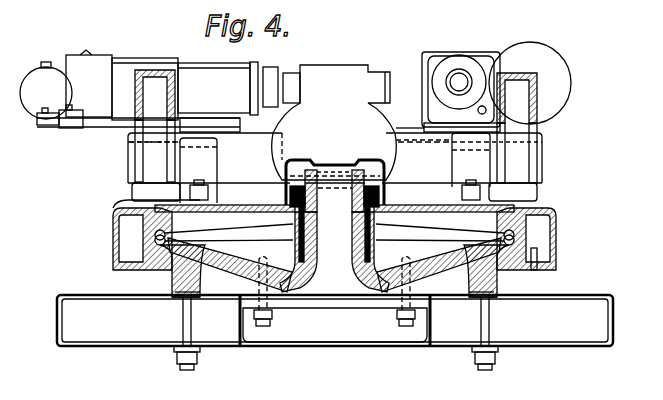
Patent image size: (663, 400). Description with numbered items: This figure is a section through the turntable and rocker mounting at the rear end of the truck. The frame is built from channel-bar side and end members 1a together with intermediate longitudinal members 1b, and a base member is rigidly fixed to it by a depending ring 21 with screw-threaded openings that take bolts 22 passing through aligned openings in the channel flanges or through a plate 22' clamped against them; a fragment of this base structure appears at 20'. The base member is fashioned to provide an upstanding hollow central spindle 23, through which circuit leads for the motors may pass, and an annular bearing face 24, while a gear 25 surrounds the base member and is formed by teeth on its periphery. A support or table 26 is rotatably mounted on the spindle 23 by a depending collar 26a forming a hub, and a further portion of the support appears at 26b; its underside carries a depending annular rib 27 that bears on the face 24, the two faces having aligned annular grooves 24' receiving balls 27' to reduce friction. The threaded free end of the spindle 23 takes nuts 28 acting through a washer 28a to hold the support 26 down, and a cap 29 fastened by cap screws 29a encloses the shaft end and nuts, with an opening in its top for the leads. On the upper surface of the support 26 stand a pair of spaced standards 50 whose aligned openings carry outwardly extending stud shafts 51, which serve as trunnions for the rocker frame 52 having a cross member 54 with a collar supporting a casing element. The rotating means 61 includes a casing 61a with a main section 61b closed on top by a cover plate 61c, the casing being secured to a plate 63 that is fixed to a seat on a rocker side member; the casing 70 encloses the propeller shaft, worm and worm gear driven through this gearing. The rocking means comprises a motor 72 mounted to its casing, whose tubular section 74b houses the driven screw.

The side and end members 1a is at (625, 340).
The intermediate longitudinal members 1b is at (338, 320).
The arm 20' is at (334, 265).
The depending ring 21 is at (170, 288).
The bolts 22 is at (336, 324).
The plate 22' is at (335, 325).
The central shaft or spindle 23 is at (334, 231).
The annular bearing face 24 is at (334, 239).
The annular grooves 24' is at (357, 237).
The gear 25 is at (540, 274).
The support or table 26 is at (574, 230).
The depending collar 26a is at (293, 235).
The pivot 26b is at (334, 235).
The depending annular rib 27 is at (147, 198).
The balls 27' is at (334, 236).
The nuts 28 is at (386, 180).
The washer 28a is at (386, 197).
The cap 29 is at (285, 176).
The cap screws 29a is at (286, 193).
The standards 50 is at (226, 152).
The stud shafts 51 is at (219, 160).
The frame or rocker 52 is at (545, 130).
The cross member 54 is at (403, 133).
The rotating means 61 is at (145, 79).
The casing 61a is at (183, 62).
The main section 61b is at (89, 86).
The cover or plate 61c is at (95, 54).
The plate 63 is at (108, 128).
The casing 70 is at (332, 72).
The motor 72 is at (565, 80).
The tubular section 74b is at (458, 62).